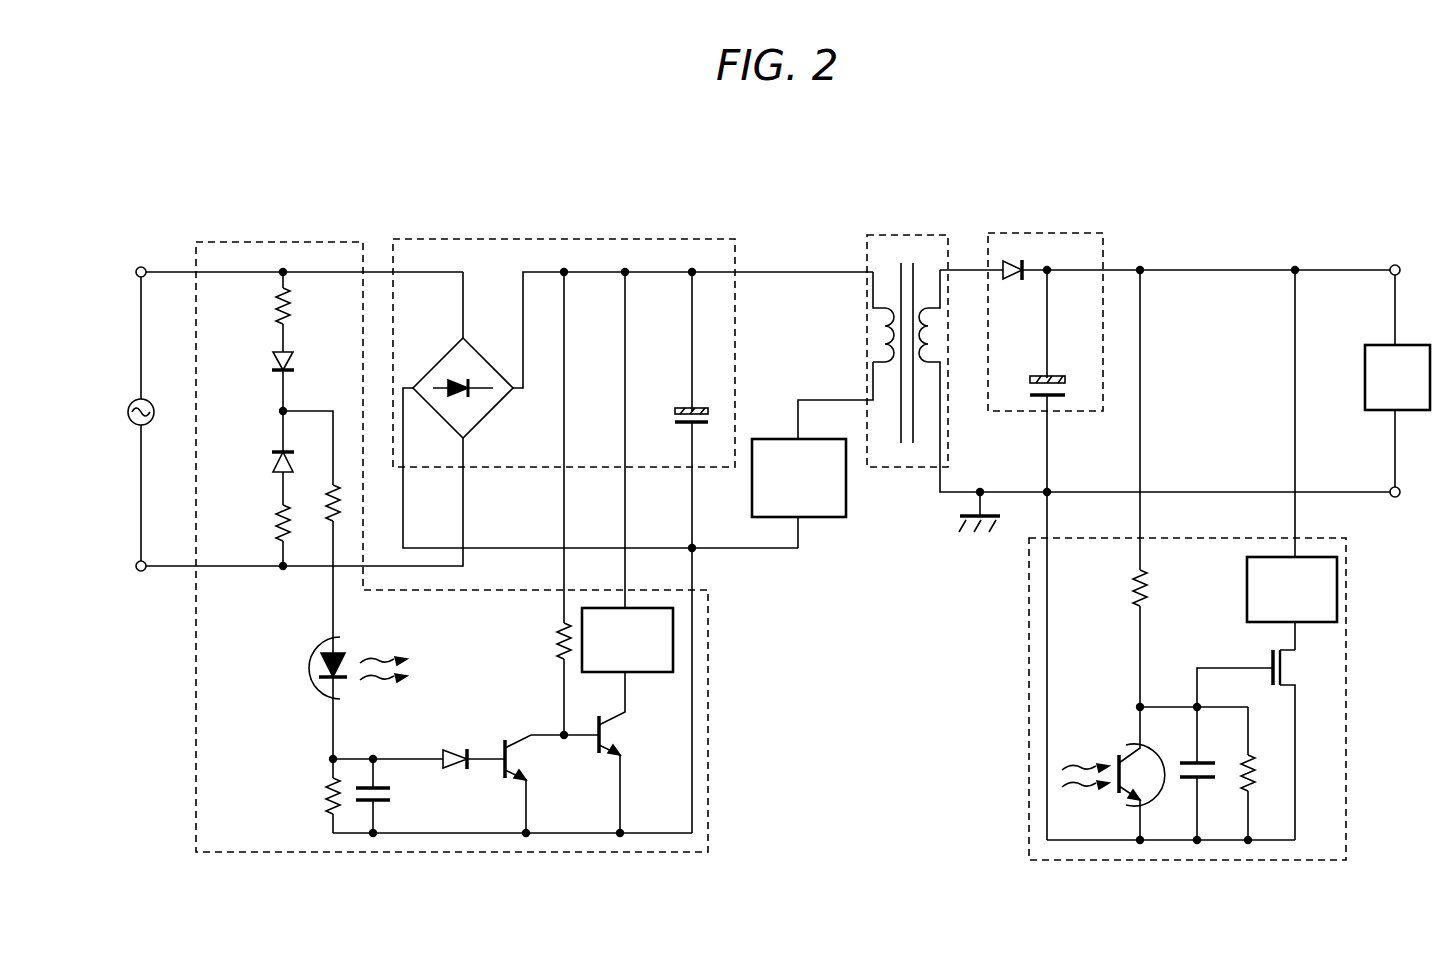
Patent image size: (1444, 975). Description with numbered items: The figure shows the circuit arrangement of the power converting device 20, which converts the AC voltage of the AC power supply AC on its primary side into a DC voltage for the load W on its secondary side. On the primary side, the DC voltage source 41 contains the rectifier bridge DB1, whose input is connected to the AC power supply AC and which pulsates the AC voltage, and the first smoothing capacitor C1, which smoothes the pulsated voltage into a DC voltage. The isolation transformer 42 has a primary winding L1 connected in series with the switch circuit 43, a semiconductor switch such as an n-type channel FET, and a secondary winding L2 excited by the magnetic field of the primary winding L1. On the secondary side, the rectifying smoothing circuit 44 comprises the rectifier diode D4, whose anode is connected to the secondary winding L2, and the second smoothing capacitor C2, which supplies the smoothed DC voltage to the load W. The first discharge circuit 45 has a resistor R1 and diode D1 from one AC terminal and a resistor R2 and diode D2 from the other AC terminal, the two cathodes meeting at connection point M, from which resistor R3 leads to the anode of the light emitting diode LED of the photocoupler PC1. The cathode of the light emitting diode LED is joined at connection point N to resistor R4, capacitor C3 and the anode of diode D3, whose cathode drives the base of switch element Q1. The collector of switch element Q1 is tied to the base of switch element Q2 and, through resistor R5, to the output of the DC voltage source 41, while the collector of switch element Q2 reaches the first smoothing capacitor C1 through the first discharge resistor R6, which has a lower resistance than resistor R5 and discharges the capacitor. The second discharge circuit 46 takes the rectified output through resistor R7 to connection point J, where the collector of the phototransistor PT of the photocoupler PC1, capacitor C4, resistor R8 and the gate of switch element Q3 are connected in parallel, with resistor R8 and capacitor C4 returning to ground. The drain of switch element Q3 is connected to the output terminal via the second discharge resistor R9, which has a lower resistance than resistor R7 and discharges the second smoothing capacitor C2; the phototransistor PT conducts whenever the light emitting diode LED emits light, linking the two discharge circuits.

The power converting device 20 is at (809, 202).
The DC voltage source 41 is at (557, 237).
The isolation transformer 42 is at (900, 233).
The switch circuit 43 is at (776, 439).
The rectifying smoothing circuit 44 is at (1062, 232).
The first discharge circuit 45 is at (283, 242).
The second discharge circuit 46 is at (1029, 650).
The AC power supply AC is at (134, 402).
The resistor R1 is at (280, 309).
The diode D1 is at (274, 361).
The connection point M is at (288, 408).
The diode D2 is at (274, 462).
The resistor R2 is at (280, 524).
The resistor R3 is at (340, 500).
The rectifier bridge DB1 is at (440, 371).
The first smoothing capacitor C1 is at (702, 408).
The primary winding L1 is at (884, 333).
The secondary winding L2 is at (934, 341).
The rectifier diode D4 is at (1005, 261).
The second smoothing capacitor C2 is at (1056, 380).
The load W is at (1412, 344).
The photocoupler PC1 is at (304, 668).
The light emitting diode LED is at (344, 655).
The phototransistor PT is at (1115, 755).
The connection point N is at (373, 753).
The resistor R4 is at (330, 789).
The capacitor C3 is at (393, 792).
The diode D3 is at (448, 750).
The switch element Q1 is at (499, 747).
The switch element Q2 is at (594, 727).
The resistor R5 is at (554, 640).
The first discharge resistor R6 is at (645, 607).
The resistor R7 is at (1151, 585).
The connection point J is at (1135, 704).
The capacitor C4 is at (1206, 760).
The resistor R8 is at (1256, 758).
The second discharge resistor R9 is at (1312, 557).
The switch element Q3 is at (1268, 660).